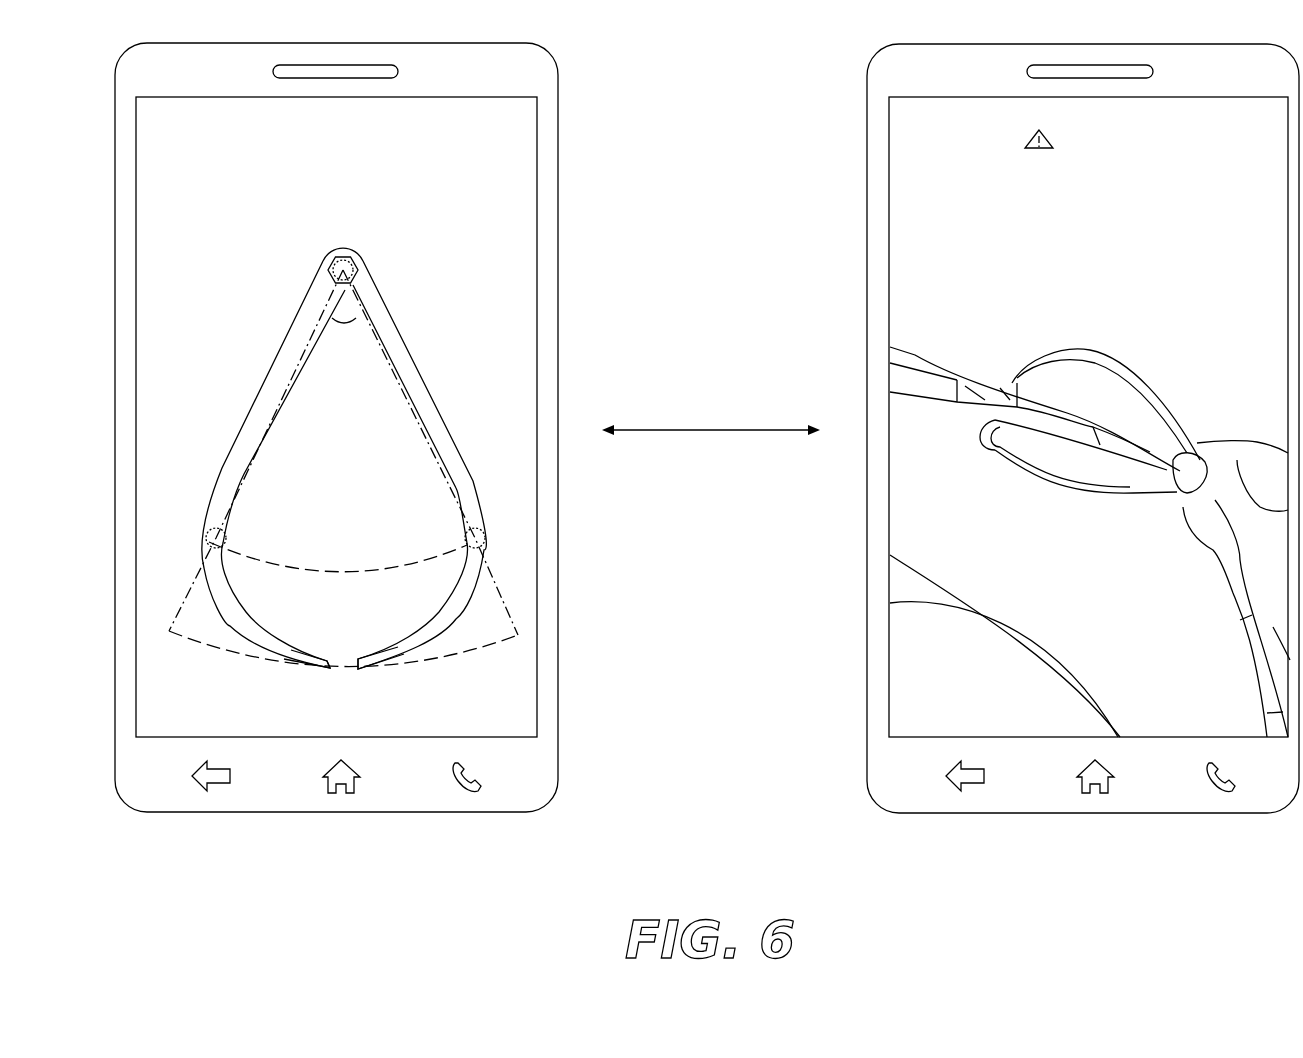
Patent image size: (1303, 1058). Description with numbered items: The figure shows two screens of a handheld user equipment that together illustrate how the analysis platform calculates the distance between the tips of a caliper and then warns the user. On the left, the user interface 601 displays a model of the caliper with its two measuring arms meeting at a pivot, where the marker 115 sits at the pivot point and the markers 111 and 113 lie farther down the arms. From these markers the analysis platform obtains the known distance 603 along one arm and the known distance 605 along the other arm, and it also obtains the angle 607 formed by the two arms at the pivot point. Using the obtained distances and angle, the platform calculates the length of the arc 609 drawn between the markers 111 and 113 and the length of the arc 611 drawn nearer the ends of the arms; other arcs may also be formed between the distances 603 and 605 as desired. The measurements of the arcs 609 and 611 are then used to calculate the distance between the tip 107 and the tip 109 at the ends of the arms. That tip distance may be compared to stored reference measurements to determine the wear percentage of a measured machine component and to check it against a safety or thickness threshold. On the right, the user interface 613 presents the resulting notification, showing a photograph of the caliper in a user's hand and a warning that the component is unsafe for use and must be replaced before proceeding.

The user interface 601 is at (148, 407).
The known distance 603 is at (286, 372).
The known distance 605 is at (384, 372).
The angle 607 is at (345, 328).
The arc 609 is at (398, 561).
The arc 611 is at (229, 654).
The user interface 613 is at (903, 297).
The tip 107 is at (333, 671).
The tip 109 is at (364, 671).
The marker 111 is at (208, 532).
The marker 113 is at (482, 530).
The marker 115 is at (330, 257).